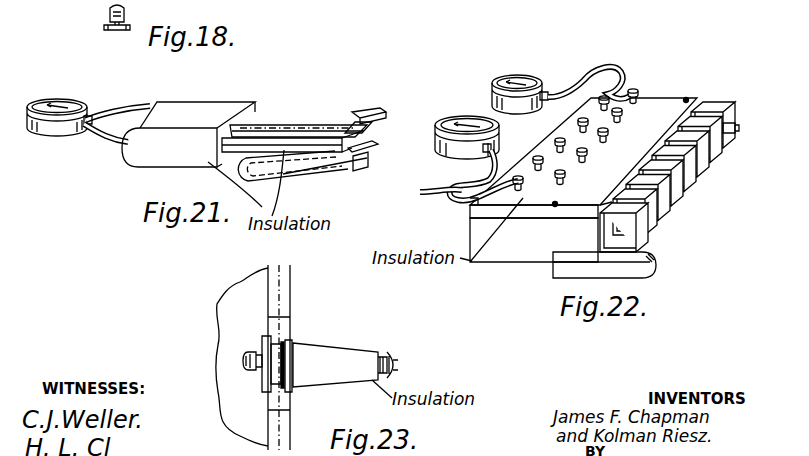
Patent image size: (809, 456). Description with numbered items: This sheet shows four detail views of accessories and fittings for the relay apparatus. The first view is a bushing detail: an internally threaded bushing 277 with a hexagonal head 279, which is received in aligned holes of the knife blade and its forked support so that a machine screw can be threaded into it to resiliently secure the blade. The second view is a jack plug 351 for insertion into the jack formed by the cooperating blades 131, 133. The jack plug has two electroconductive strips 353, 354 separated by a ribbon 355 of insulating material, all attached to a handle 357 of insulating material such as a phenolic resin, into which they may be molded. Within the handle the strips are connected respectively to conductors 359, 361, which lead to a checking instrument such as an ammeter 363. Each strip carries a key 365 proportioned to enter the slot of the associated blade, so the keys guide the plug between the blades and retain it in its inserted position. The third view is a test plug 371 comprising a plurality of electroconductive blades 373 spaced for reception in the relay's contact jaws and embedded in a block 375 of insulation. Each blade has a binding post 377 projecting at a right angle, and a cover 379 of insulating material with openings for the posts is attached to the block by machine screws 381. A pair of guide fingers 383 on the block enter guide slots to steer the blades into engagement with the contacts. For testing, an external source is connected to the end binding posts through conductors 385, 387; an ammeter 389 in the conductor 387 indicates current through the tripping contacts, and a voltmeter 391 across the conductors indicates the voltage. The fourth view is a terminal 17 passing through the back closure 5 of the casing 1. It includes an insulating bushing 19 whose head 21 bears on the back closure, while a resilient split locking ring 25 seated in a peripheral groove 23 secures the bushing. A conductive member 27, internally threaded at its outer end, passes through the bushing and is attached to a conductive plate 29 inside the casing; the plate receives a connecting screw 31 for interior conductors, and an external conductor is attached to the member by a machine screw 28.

In FIG. 18, the internally threaded bushing 277 is at (126, 12).
In FIG. 18, the hexagonal head 279 is at (104, 27).
In FIG. 21, the ammeter 363 is at (77, 102).
In FIG. 21, the conductor 359 is at (123, 108).
In FIG. 21, the jack plug 351 is at (250, 102).
In FIG. 21, the blade 133 is at (284, 122).
In FIG. 21, the key 365 is at (326, 128).
In FIG. 21, the electroconductive strip 353 is at (355, 126).
In FIG. 21, the ribbon of insulating material 355 is at (370, 120).
In FIG. 21, the electroconductive strip 354 is at (335, 152).
In FIG. 21, the spring blade 131 is at (292, 185).
In FIG. 21, the handle 357 is at (152, 168).
In FIG. 21, the conductor 361 is at (113, 138).
In FIG. 22, the conductor 387 is at (552, 66).
In FIG. 22, the ammeter 389 is at (504, 74).
In FIG. 22, the voltmeter 391 is at (476, 116).
In FIG. 22, the conductor 385 is at (452, 188).
In FIG. 22, the machine screw 381 is at (688, 98).
In FIG. 22, the block of insulation 375 is at (470, 243).
In FIG. 22, the test plug 371 is at (492, 262).
In FIG. 22, the binding post 377 is at (565, 182).
In FIG. 22, the cover 379 is at (668, 98).
In FIG. 22, the guide finger 383 is at (640, 278).
In FIG. 22, the electroconductive blade 373 is at (678, 250).
In FIG. 23, the casing 1 is at (240, 286).
In FIG. 23, the back closure 5 is at (292, 287).
In FIG. 23, the resilient split locking ring 25 is at (292, 342).
In FIG. 23, the conductive plate 29 is at (264, 340).
In FIG. 23, the terminal 17 is at (350, 345).
In FIG. 23, the conductive member 27 is at (388, 352).
In FIG. 23, the connecting screw 31 is at (243, 359).
In FIG. 23, the machine screw 28 is at (396, 372).
In FIG. 23, the head 21 is at (274, 392).
In FIG. 23, the peripheral groove 23 is at (292, 392).
In FIG. 23, the bushing 19 is at (352, 385).